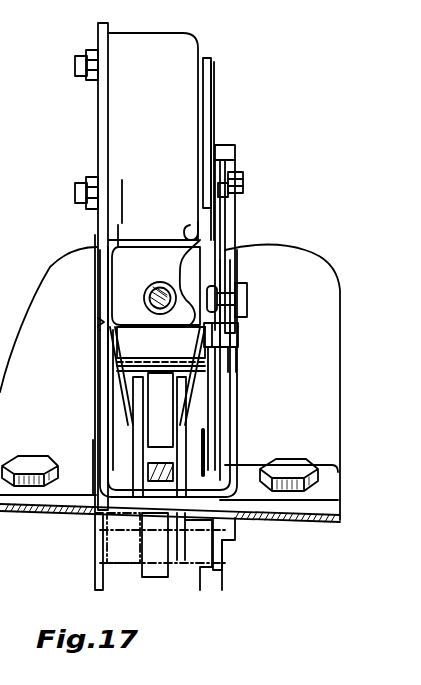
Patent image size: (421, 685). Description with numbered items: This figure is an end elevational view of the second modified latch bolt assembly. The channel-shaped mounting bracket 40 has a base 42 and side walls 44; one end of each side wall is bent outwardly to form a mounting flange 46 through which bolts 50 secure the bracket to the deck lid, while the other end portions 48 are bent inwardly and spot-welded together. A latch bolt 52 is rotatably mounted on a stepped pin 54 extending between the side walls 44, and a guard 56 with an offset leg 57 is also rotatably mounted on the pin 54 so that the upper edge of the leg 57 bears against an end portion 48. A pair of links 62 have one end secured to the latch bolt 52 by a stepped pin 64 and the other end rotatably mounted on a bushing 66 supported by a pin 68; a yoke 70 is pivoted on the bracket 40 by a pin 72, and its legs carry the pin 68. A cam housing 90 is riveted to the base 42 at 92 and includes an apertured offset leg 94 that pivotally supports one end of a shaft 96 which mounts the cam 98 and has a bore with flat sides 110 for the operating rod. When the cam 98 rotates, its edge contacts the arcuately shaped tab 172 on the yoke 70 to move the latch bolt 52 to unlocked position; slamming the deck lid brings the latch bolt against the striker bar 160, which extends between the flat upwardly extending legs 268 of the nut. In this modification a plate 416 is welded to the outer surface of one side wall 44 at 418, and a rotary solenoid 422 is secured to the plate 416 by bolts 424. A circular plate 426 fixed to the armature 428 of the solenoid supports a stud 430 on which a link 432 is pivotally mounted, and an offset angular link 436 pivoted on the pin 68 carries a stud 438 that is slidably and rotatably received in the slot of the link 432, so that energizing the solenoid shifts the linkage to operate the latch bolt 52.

The plate 416 is at (99, 141).
The bolts 424 is at (78, 63).
The rotary solenoid 422 is at (175, 58).
The circular plate 426 is at (207, 85).
The armature 428 is at (190, 120).
The base 42 is at (218, 150).
The stud 430 is at (240, 174).
The link 432 is at (235, 205).
The rivet location 92 is at (190, 228).
The apertured offset leg 94 is at (138, 243).
The cam housing 90 is at (130, 250).
The shaft 96 is at (165, 297).
The flat sides 110 is at (172, 298).
The cam 98 is at (108, 268).
The mounting bracket 40 is at (100, 306).
The stud 438 is at (246, 292).
The weld location 418 is at (98, 322).
The arcuately shaped tab 172 is at (236, 326).
The yoke 70 is at (232, 340).
The pin 72 is at (230, 355).
The offset angular link 436 is at (236, 367).
The stepped pin 64 is at (133, 392).
The latch bolt 52 is at (228, 396).
The links 62 is at (225, 425).
The pin 68 is at (215, 454).
The side walls 44 is at (100, 370).
The bolts 50 is at (26, 460).
The pin 54 is at (97, 447).
The mounting flange 46 is at (14, 514).
The bushing 66 is at (128, 516).
The end portions 48 is at (150, 516).
The offset leg 57 is at (180, 565).
The striker bar 160 is at (200, 575).
The guard 56 is at (222, 535).
The flat upwardly extending legs 268 is at (225, 578).